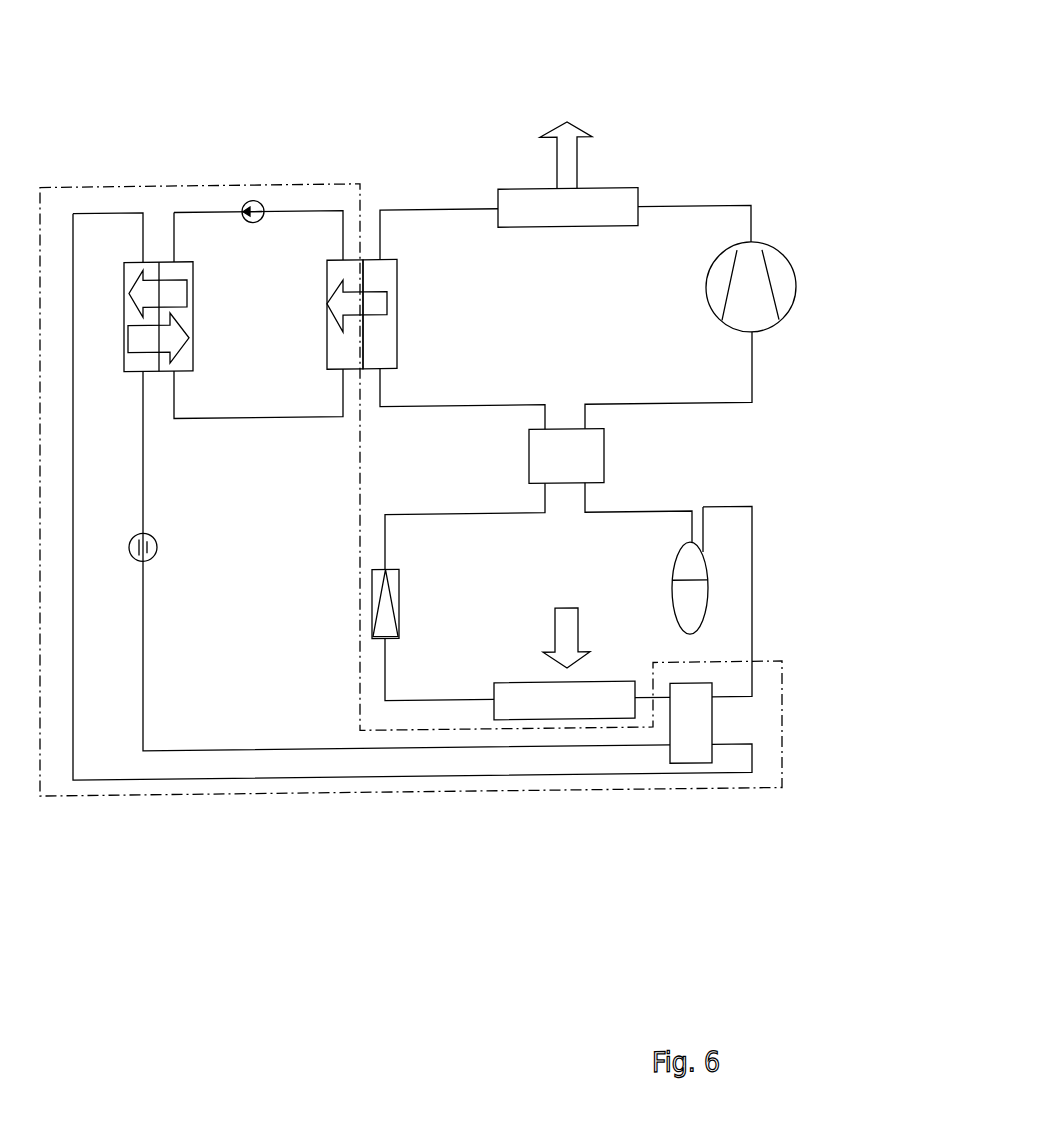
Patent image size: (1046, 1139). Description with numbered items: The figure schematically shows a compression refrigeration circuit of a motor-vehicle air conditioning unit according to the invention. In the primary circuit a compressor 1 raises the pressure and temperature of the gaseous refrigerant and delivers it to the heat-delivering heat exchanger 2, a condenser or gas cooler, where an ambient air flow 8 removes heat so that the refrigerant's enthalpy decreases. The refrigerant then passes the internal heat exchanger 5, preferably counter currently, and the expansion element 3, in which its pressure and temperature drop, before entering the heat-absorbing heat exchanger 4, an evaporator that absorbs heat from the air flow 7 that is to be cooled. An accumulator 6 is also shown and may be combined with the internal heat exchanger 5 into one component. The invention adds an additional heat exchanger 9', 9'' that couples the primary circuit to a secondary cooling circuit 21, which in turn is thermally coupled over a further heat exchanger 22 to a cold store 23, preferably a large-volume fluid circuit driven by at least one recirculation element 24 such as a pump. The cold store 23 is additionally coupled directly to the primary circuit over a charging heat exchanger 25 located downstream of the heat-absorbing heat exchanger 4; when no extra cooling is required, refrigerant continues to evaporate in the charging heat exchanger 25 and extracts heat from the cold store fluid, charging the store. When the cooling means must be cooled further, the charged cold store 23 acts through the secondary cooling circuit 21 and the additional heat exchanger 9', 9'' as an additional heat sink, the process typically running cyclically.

The compressor 1 is at (748, 301).
The heat-delivering heat exchanger 2 is at (610, 219).
The expansion element 3 is at (385, 628).
The heat-absorbing heat exchanger 4 is at (512, 703).
The internal heat exchanger 5 is at (585, 447).
The accumulator 6 is at (690, 615).
The air flow 7 is at (570, 656).
The ambient air flow 8 is at (568, 158).
The additional heat exchanger 9' is at (415, 205).
The additional heat exchanger 9'' is at (327, 196).
The secondary cooling circuit 21 is at (253, 263).
The further heat exchanger 22 is at (175, 275).
The cold store 23 is at (117, 743).
The recirculation element 24 is at (148, 563).
The charging heat exchanger 25 is at (690, 738).